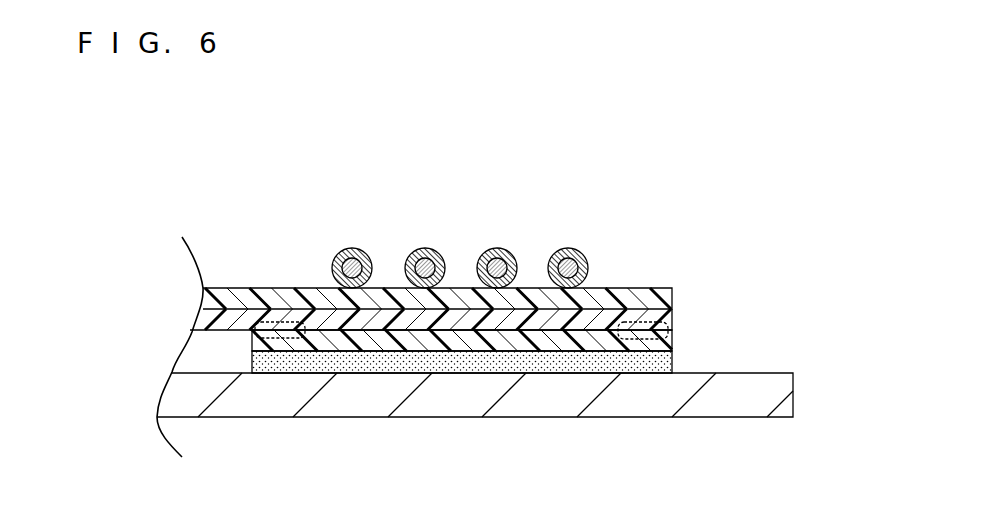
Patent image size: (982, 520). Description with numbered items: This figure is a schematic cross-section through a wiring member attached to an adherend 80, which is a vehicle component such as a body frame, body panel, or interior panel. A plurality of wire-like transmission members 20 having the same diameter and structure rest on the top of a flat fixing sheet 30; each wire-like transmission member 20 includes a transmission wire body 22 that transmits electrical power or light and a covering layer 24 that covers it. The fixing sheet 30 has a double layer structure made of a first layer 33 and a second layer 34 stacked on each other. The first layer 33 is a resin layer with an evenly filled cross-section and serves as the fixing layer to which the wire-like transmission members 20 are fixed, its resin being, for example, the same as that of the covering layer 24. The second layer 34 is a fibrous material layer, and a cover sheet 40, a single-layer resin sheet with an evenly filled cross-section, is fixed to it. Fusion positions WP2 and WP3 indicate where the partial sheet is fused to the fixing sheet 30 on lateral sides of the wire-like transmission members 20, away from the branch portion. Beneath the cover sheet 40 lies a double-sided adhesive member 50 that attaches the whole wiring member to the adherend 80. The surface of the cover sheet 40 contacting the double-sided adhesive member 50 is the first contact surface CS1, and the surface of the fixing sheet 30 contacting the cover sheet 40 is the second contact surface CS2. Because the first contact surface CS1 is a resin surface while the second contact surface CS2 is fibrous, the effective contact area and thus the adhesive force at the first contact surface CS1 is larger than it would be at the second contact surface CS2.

The wire-like transmission member 20 is at (456, 225).
The transmission wire body 22 is at (362, 254).
The covering layer 24 is at (351, 258).
The fixing sheet 30 is at (480, 296).
The first layer 33 is at (673, 292).
The second layer 34 is at (673, 313).
The cover sheet 40 is at (673, 338).
The double-sided adhesive member 50 is at (673, 360).
The adherend 80 is at (497, 418).
The fusion position WP2 is at (282, 321).
The fusion position WP3 is at (642, 321).
The first contact surface CS1 is at (397, 353).
The second contact surface CS2 is at (327, 331).